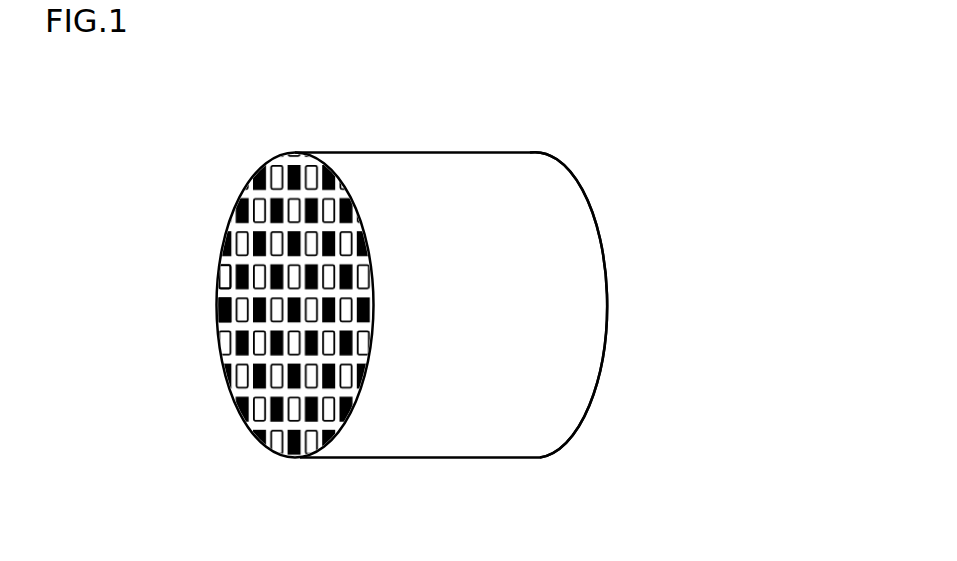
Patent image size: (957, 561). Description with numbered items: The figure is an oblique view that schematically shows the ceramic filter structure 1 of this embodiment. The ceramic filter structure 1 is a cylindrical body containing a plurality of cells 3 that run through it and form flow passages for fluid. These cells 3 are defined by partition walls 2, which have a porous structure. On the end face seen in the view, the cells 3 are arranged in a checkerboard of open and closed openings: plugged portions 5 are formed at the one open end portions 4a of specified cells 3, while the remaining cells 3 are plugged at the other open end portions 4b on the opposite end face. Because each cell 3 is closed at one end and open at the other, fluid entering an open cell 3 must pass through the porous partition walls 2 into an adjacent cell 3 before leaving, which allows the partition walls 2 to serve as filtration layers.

The ceramic filter structure 1 is at (474, 183).
The partition walls 2 is at (236, 223).
The cells 3 is at (224, 283).
The plugged portions 5 is at (222, 318).
The one open end portions 4a is at (247, 437).
The other open end portions 4b is at (575, 430).